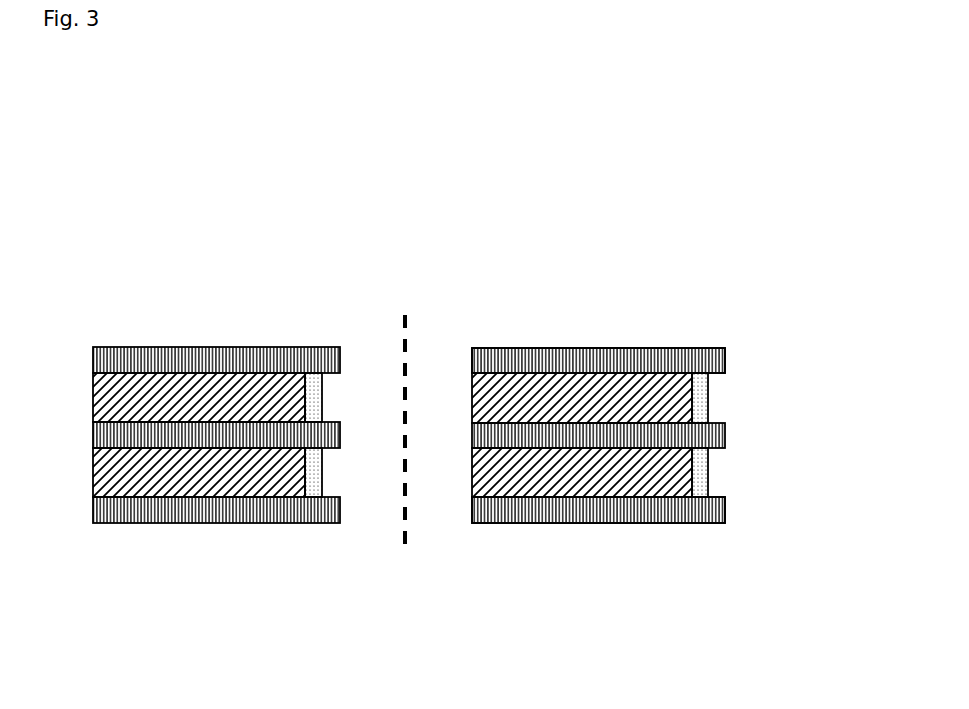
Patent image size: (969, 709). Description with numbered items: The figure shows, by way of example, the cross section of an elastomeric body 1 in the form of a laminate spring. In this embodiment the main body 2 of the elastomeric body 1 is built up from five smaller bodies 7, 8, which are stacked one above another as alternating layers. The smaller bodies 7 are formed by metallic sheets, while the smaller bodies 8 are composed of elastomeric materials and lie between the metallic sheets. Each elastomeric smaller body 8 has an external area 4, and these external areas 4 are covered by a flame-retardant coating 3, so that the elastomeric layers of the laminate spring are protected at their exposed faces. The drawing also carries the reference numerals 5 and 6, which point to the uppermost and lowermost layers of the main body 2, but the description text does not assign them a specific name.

The elastomeric body 1 is at (80, 312).
The main body 2 is at (660, 457).
The flame-retardant coating 3 is at (702, 399).
The external area 4 is at (693, 473).
The top electrode layer 5 is at (497, 373).
The bottom electrode layer 6 is at (518, 503).
The smaller body 7 is at (655, 507).
The smaller body 8 is at (562, 473).